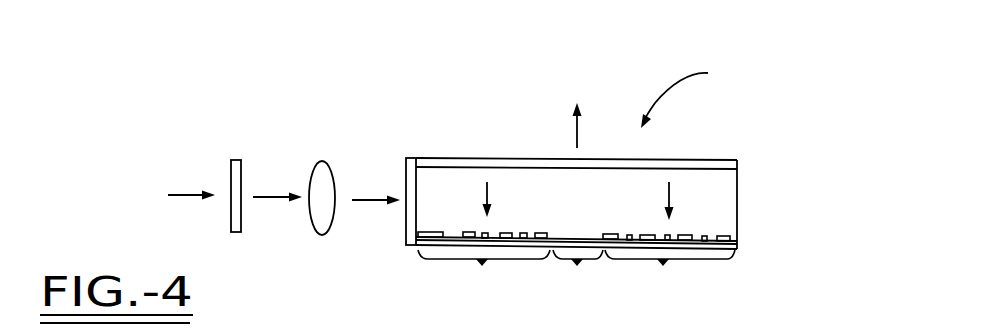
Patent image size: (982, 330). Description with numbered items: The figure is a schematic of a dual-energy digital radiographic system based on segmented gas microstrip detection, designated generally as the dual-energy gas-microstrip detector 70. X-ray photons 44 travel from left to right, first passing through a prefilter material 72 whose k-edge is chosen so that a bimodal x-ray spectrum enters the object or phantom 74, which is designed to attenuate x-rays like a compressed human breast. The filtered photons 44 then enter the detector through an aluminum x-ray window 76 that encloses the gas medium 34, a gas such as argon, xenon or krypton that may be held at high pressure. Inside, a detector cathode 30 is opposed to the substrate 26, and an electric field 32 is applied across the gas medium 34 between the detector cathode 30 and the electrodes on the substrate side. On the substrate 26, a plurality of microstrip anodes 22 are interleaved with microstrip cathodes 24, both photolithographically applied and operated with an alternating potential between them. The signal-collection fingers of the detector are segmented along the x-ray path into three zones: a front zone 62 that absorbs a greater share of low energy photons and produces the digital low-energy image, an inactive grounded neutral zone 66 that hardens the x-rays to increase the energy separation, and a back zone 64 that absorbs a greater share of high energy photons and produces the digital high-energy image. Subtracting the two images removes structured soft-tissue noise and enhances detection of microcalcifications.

The x-ray photons 44 is at (168, 195).
The prefilter material 72 is at (232, 160).
The object or phantom 74 is at (322, 161).
The aluminum x-ray window 76 is at (410, 158).
The dual-energy gas-microstrip detector 70 is at (658, 155).
The detector cathode 30 is at (738, 167).
The electric field 32 is at (483, 191).
The gas medium 34 is at (592, 207).
The microstrip anodes 22 is at (445, 236).
The microstrip cathodes 24 is at (412, 226).
The substrate 26 is at (738, 248).
The front zone 62 is at (484, 274).
The neutral zone 66 is at (578, 275).
The back zone 64 is at (670, 275).